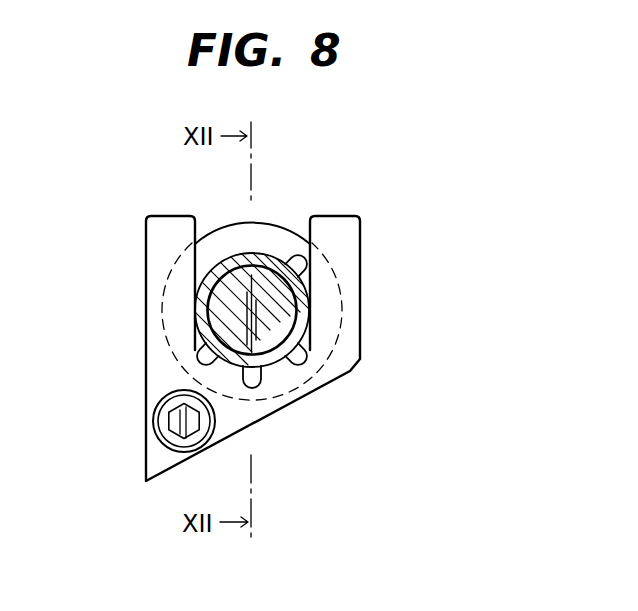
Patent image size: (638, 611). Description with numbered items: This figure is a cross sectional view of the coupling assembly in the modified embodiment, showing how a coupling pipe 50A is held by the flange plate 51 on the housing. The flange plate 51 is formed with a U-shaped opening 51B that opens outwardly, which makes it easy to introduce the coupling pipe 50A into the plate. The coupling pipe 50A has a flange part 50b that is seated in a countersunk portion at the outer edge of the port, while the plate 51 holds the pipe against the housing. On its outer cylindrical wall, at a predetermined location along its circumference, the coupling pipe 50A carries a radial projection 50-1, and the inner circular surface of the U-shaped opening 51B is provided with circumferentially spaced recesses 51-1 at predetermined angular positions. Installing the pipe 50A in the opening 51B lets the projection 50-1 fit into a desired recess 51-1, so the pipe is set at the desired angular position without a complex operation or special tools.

The coupling pipe 50A is at (267, 253).
The flange part 50b is at (222, 237).
The radial projection 50-1 is at (253, 378).
The flange plate 51 is at (343, 225).
The U-shaped opening 51B is at (312, 266).
The recess 51-1 is at (200, 350).